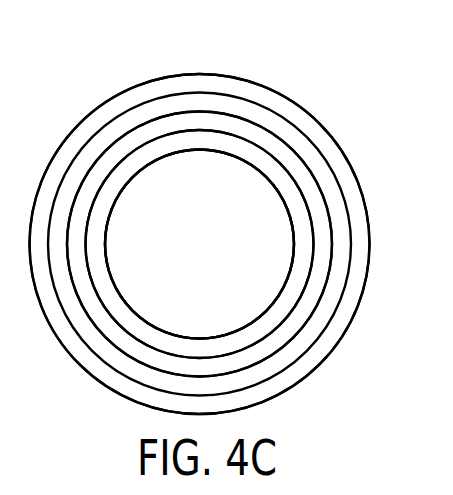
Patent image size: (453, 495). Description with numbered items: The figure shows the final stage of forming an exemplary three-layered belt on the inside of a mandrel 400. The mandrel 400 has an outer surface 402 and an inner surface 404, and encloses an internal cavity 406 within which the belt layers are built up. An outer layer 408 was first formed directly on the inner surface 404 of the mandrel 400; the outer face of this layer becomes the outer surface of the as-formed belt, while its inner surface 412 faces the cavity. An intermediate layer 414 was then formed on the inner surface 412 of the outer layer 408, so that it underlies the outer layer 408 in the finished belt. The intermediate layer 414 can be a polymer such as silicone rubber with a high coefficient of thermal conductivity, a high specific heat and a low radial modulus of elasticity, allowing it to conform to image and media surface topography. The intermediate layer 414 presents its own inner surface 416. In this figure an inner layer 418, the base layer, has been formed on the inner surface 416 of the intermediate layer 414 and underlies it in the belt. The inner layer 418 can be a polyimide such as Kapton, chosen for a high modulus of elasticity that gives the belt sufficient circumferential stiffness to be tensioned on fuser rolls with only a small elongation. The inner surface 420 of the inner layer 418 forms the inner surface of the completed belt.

The mandrel 400 is at (338, 133).
The outer surface of the mandrel 402 is at (282, 91).
The inner surface of the mandrel 404 is at (221, 93).
The internal cavity 406 is at (158, 317).
The outer layer 408 is at (138, 120).
The inner surface of the outer layer 412 is at (292, 149).
The intermediate layer 414 is at (320, 258).
The inner surface of the intermediate layer 416 is at (265, 326).
The inner layer 418 is at (240, 342).
The inner surface of the inner layer 420 is at (105, 223).